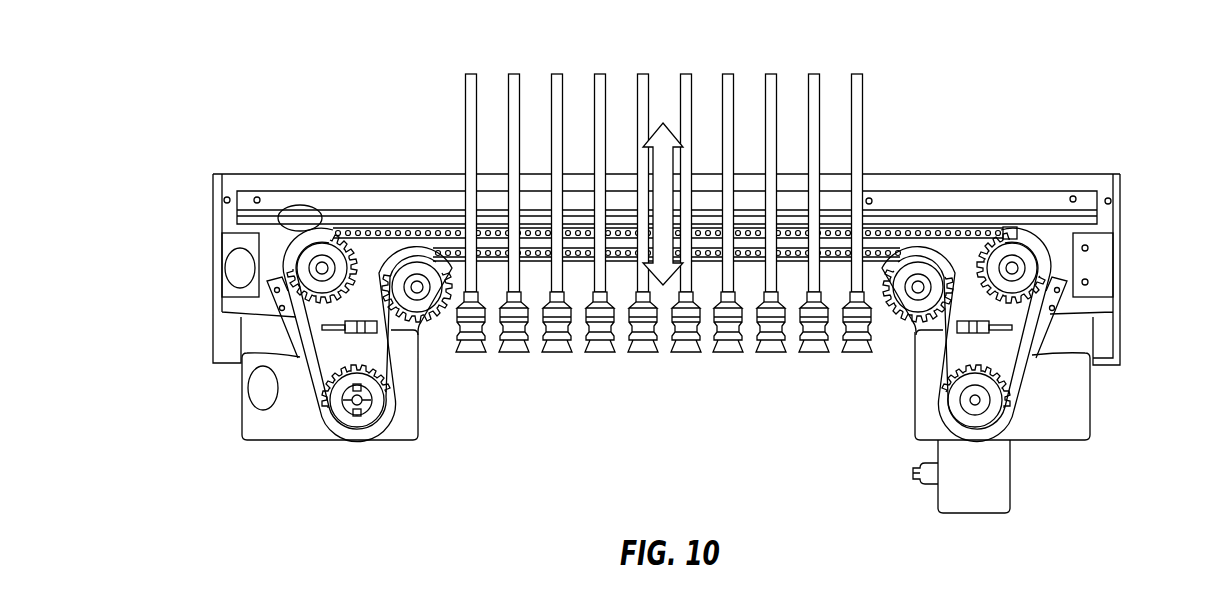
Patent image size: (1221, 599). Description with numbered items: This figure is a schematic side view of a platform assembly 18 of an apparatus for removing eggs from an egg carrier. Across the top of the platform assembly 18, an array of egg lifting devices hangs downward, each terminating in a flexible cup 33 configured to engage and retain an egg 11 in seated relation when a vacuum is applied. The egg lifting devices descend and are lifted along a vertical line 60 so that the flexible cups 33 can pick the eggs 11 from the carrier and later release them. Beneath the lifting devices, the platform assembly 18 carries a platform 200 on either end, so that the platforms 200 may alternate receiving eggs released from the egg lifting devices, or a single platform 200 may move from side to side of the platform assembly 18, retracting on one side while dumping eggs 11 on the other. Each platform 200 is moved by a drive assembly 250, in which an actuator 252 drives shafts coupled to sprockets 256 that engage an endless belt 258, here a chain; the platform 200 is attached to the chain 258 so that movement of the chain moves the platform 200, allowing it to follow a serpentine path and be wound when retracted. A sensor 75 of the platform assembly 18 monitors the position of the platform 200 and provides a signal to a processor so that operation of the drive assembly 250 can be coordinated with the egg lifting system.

The platform assembly 18 is at (168, 162).
The egg 11 is at (298, 218).
The vertical line 60 is at (658, 162).
The endless belt 258 is at (830, 227).
The sprocket 256 is at (1017, 250).
The drive assembly 250 is at (986, 255).
The sensor 75 is at (993, 333).
The platform 200 is at (318, 388).
The actuator 252 is at (977, 491).
The flexible cup 33 is at (469, 345).